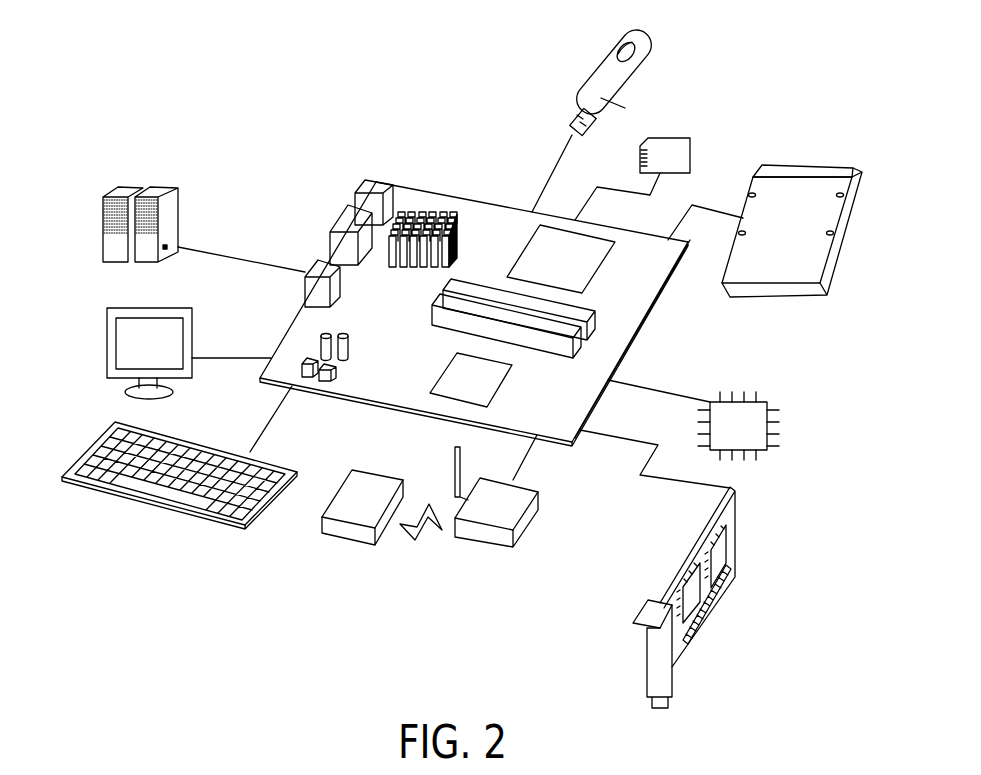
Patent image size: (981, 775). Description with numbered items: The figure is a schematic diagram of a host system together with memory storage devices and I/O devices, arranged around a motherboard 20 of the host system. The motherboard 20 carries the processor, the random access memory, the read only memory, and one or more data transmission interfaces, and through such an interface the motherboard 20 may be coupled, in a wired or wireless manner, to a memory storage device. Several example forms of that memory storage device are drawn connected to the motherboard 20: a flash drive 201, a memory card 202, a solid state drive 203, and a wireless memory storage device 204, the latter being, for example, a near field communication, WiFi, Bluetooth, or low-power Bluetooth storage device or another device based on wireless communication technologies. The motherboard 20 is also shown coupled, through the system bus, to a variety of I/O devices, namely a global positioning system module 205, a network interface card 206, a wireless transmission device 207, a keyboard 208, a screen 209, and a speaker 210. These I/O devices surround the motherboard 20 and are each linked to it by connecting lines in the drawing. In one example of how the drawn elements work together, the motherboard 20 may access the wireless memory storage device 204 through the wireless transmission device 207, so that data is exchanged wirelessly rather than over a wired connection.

The motherboard 20 is at (476, 218).
The flash drive 201 is at (595, 76).
The memory card 202 is at (690, 148).
The solid state drive 203 is at (815, 163).
The wireless memory storage device 204 is at (340, 481).
The global positioning system (GPS) module 205 is at (777, 423).
The network interface card 206 is at (735, 545).
The wireless transmission device 207 is at (535, 528).
The keyboard 208 is at (182, 513).
The screen 209 is at (107, 362).
The speaker 210 is at (103, 247).